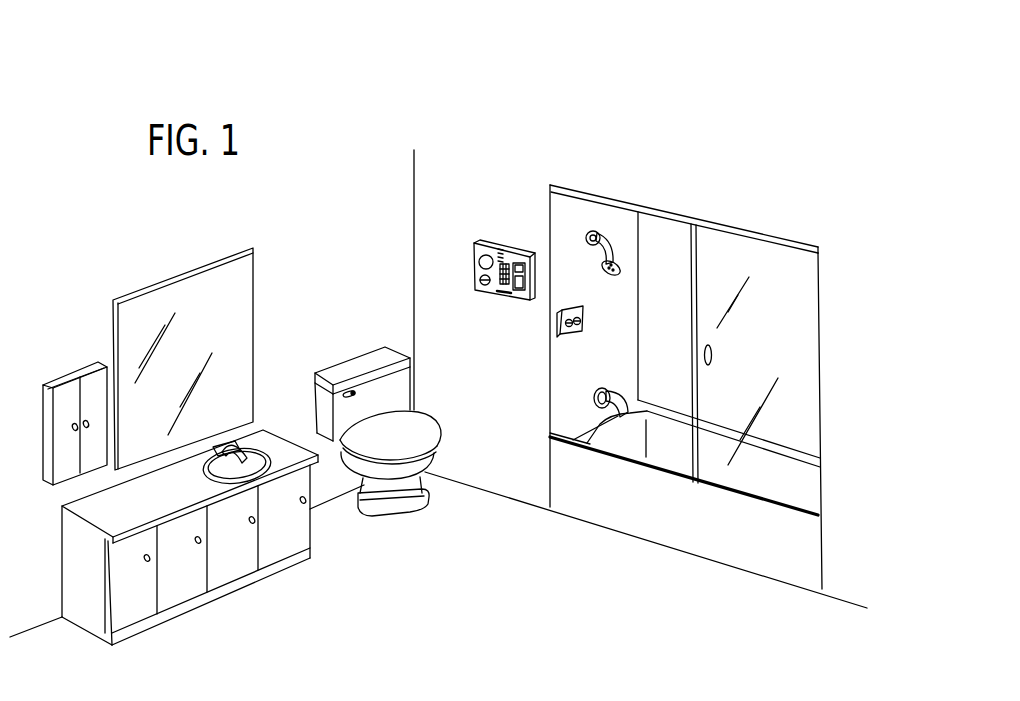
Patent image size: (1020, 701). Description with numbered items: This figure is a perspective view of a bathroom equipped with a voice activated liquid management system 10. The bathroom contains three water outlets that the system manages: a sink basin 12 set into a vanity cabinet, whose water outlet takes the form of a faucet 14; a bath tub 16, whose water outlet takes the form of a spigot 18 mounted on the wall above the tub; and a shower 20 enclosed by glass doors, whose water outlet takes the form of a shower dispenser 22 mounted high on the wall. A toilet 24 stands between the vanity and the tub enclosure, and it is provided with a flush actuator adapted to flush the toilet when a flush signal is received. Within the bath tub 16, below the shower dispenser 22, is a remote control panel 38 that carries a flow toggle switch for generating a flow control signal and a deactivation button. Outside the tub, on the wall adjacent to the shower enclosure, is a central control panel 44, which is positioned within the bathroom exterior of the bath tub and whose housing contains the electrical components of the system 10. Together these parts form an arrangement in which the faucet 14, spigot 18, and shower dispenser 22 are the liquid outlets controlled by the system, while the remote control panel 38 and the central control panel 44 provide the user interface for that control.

The voice activated liquid management system 10 is at (573, 110).
The sink basin 12 is at (264, 450).
The faucet 14 is at (228, 443).
The bath tub 16 is at (657, 513).
The spigot 18 is at (573, 440).
The shower 20 is at (663, 268).
The shower dispenser 22 is at (616, 252).
The toilet 24 is at (430, 418).
The remote control panel 38 is at (568, 307).
The central control panel 44 is at (500, 253).